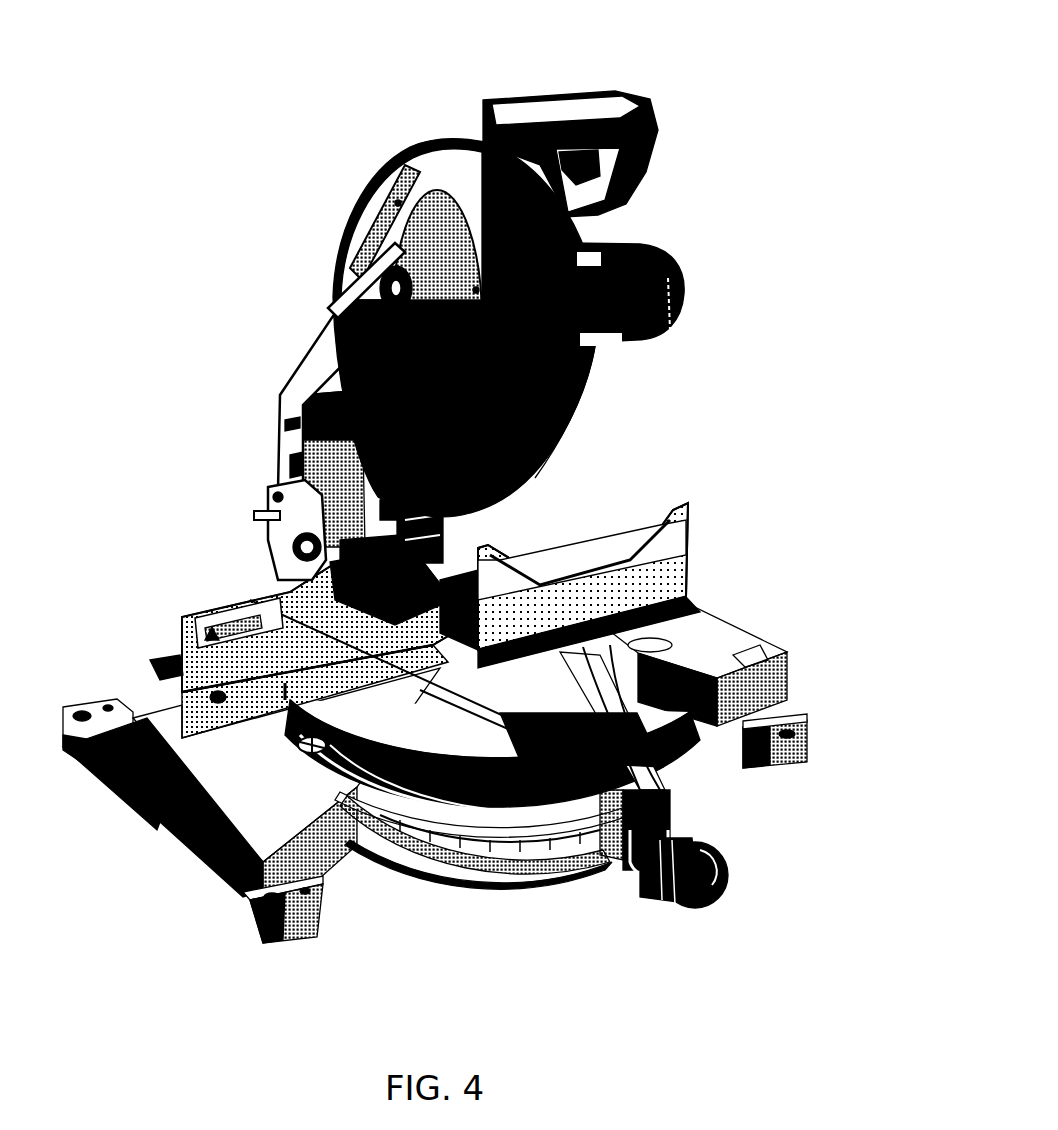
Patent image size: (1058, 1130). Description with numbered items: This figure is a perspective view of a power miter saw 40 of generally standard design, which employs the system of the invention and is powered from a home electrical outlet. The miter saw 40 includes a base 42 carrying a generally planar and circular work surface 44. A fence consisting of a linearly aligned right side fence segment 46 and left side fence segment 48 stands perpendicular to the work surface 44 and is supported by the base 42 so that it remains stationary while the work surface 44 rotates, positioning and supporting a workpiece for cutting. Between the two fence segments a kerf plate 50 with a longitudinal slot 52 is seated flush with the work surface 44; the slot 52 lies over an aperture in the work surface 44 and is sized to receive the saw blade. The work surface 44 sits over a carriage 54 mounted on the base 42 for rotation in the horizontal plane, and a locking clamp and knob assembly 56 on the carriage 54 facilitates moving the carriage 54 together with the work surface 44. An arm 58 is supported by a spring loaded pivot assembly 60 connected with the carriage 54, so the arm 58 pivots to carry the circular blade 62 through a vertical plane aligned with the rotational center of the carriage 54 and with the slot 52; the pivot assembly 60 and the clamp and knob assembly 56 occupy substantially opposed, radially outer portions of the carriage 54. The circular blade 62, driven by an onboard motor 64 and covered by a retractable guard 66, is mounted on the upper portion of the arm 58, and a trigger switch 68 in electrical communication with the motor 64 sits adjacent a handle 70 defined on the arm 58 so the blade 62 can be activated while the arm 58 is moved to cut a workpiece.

The miter saw 40 is at (748, 60).
The base 42 is at (507, 866).
The work surface 44 is at (630, 640).
The right side fence segment 46 is at (688, 528).
The left side fence segment 48 is at (175, 665).
The kerf plate 50 is at (605, 700).
The longitudinal slot 52 is at (647, 780).
The carriage 54 is at (415, 805).
The locking clamp and knob assembly 56 is at (722, 882).
The arm 58 is at (355, 397).
The spring loaded pivot assembly 60 is at (292, 549).
The circular blade 62 is at (445, 140).
The motor 64 is at (690, 298).
The retractable guard 66 is at (575, 392).
The trigger switch 68 is at (598, 168).
The handle 70 is at (655, 112).